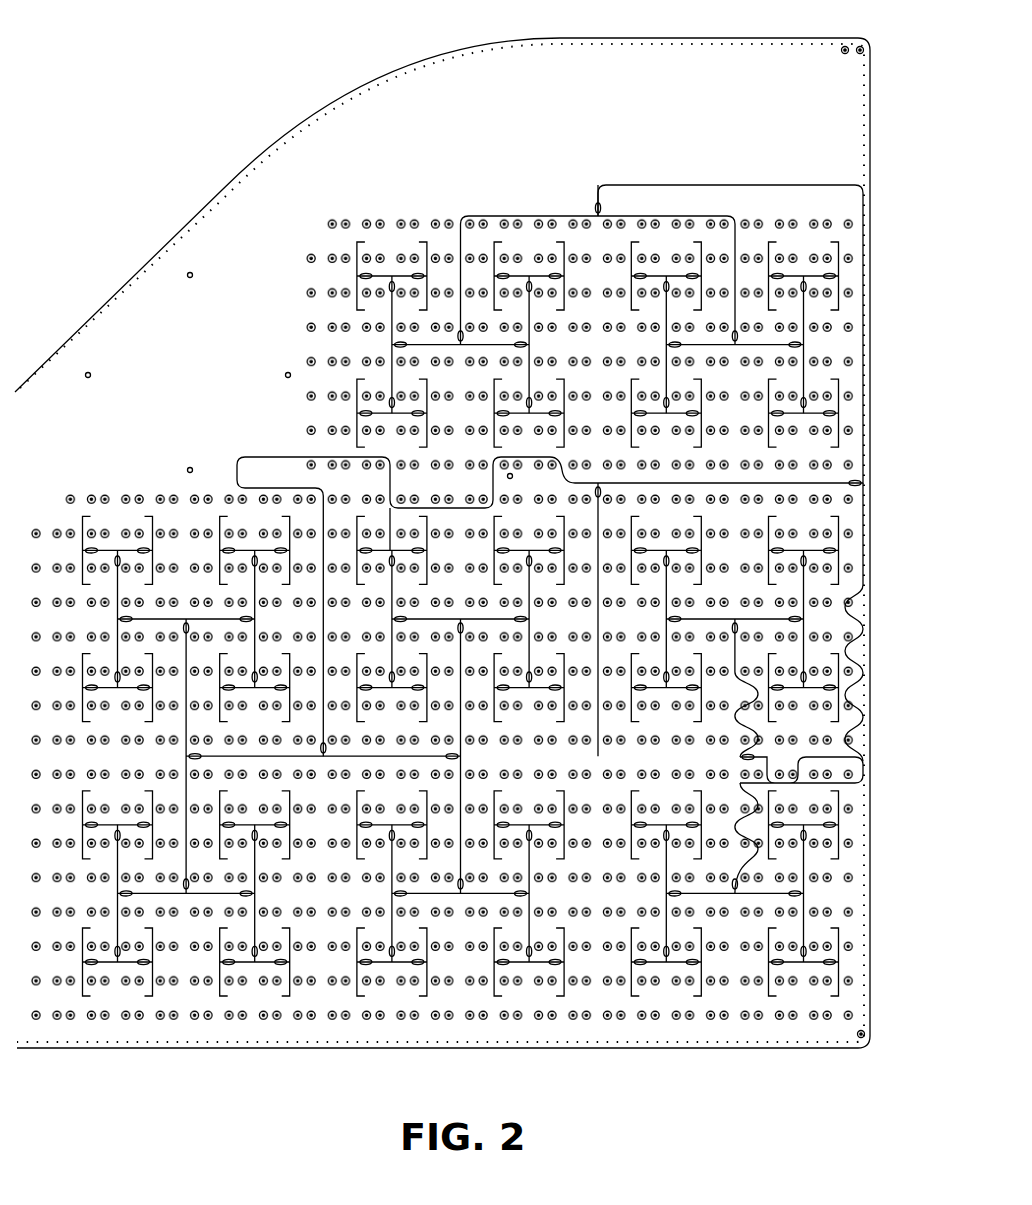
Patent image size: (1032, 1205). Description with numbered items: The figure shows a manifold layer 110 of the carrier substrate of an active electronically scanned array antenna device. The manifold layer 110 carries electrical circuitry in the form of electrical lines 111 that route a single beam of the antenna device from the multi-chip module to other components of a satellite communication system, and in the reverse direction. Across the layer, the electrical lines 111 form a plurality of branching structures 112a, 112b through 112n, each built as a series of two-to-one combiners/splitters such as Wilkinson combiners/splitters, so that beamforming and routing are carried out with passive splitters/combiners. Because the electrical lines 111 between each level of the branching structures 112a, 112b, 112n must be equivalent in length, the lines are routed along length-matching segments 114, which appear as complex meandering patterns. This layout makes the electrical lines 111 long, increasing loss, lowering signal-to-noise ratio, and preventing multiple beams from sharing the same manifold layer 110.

The manifold layer 110 is at (92, 102).
The electrical lines 111 is at (191, 409).
The branching structure 112a is at (401, 220).
The branching structure 112b is at (571, 216).
The branching structure 112n is at (806, 1002).
The length-matching segments 114 is at (884, 644).